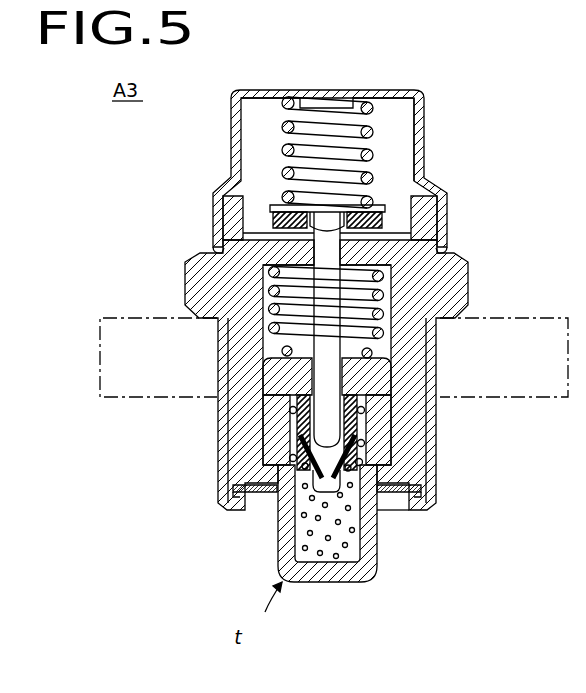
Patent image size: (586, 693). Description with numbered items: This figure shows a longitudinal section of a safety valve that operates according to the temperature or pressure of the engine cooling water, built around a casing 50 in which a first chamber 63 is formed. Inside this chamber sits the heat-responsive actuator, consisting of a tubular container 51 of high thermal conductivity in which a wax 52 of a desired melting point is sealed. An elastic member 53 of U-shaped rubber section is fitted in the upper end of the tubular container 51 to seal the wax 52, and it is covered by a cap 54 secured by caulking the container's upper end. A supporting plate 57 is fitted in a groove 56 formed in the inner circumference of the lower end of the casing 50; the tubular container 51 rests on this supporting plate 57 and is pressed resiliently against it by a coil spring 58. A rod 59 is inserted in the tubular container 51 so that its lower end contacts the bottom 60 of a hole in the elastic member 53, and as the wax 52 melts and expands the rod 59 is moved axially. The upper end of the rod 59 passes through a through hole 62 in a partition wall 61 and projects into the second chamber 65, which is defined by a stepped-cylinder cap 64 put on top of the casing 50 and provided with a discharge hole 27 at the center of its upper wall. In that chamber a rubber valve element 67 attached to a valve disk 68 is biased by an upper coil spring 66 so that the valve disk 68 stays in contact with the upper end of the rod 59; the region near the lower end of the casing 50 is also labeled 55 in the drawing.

The discharge hole 27 is at (310, 92).
The cap 64 is at (383, 92).
The second chamber 65 is at (402, 153).
The upper coil spring 66 is at (378, 124).
The valve element 67 is at (276, 224).
The valve disk 68 is at (275, 212).
The partition wall 61 is at (395, 232).
The through hole 62 is at (358, 250).
The casing 50 is at (468, 272).
The coil spring 58 is at (378, 292).
The cap 54 is at (390, 368).
The first chamber 63 is at (400, 437).
The elastic member 53 is at (350, 440).
The rod 59 is at (325, 420).
The bottom 60 is at (288, 470).
The supporting plate 57 is at (262, 493).
The groove 56 is at (408, 494).
The housing bottom 55 is at (392, 498).
The tubular container 51 is at (368, 576).
The wax 52 is at (336, 553).